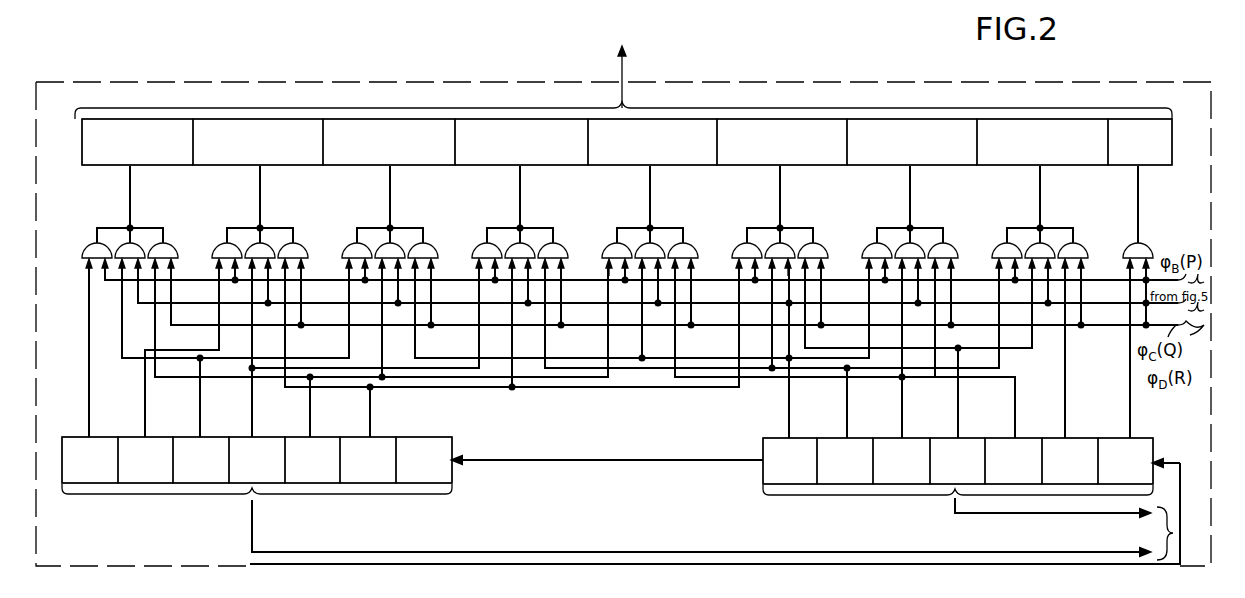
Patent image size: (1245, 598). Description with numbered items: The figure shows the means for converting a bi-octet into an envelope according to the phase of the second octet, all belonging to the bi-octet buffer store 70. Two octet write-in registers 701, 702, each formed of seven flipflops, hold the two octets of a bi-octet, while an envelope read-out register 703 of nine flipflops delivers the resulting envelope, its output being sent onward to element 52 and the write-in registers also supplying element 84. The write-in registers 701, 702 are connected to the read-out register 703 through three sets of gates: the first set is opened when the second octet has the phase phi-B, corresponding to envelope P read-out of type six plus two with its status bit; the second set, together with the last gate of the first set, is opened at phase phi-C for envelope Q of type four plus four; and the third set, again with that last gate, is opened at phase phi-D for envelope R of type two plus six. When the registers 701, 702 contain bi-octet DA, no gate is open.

The bi-octet buffer store 70 is at (126, 84).
The circuit of Fig. 4 (output destination) 52 is at (622, 65).
The circuit of Fig. 5 (output destination) 84 is at (1161, 536).
The octet write-in register 701 is at (201, 496).
The octet write-in register 702 is at (884, 496).
The envelope read-out register 703 is at (82, 152).